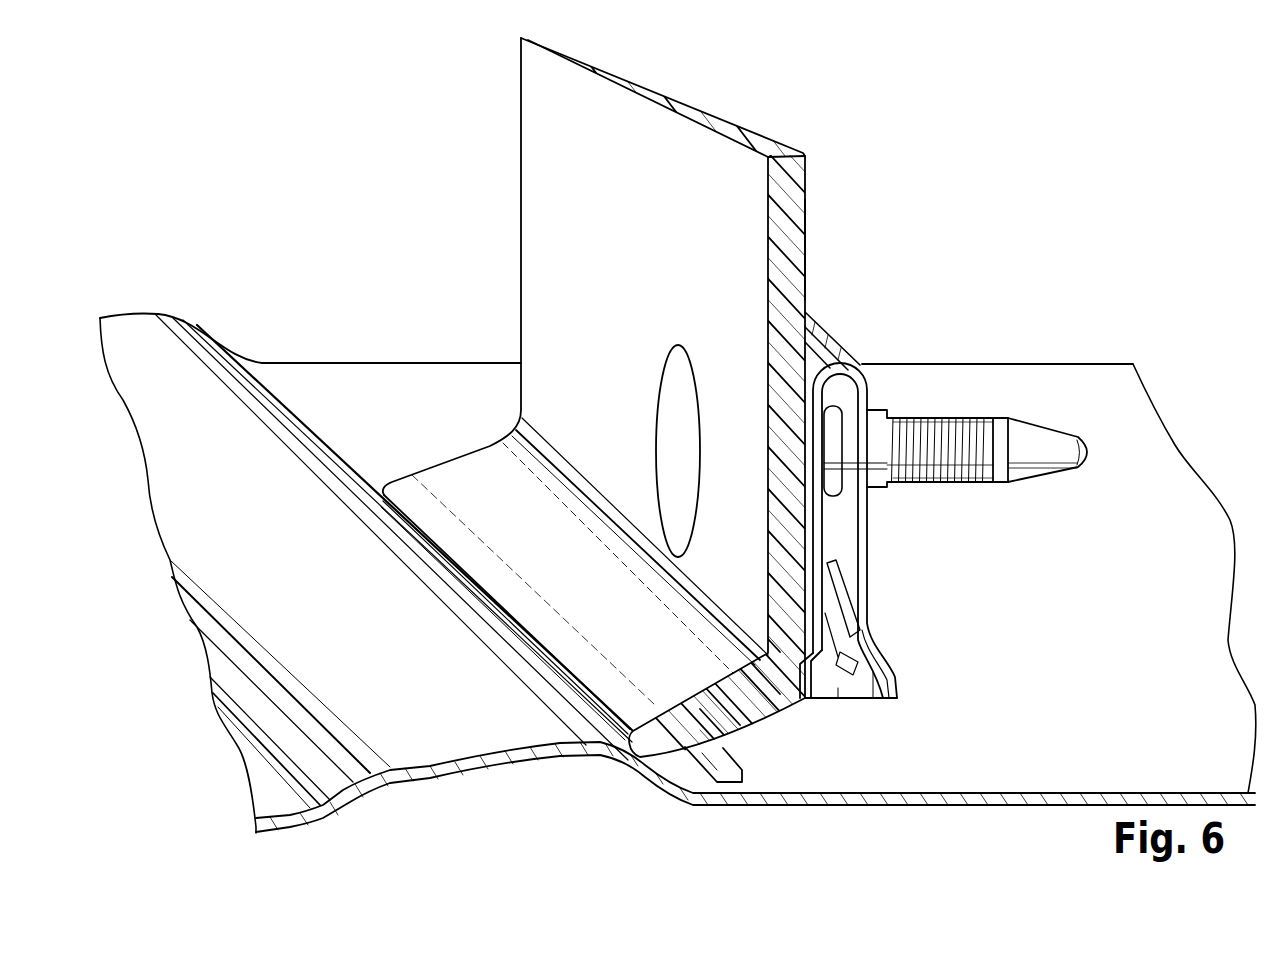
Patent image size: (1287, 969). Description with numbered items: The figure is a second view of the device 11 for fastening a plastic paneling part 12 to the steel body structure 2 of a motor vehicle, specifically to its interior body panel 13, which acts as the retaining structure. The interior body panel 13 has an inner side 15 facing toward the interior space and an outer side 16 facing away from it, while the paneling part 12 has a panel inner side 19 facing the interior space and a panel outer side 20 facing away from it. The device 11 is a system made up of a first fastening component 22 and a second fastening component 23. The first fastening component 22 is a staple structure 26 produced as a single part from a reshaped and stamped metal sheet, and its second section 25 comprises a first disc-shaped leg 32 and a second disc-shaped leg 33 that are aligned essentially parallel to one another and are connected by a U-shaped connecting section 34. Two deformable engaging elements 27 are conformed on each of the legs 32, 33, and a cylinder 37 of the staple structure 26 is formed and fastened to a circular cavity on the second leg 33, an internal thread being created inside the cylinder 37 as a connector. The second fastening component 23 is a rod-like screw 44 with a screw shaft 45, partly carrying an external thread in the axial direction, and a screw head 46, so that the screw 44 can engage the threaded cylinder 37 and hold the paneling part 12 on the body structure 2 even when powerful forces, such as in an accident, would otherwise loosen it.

The body structure 2 is at (678, 575).
The interior body panel 13 is at (678, 575).
The device 11 is at (1012, 323).
The paneling part 12 is at (806, 153).
The inner side 15 is at (421, 745).
The outer side 16 is at (513, 758).
The panel inner side 19 is at (552, 168).
The panel outer side 20 is at (808, 242).
The first fastening component 22 is at (889, 473).
The second fastening component 23 is at (907, 437).
The second section 25 is at (889, 473).
The staple structure 26 is at (889, 473).
The engaging element 27 is at (880, 648).
The first leg 32 is at (862, 522).
The second leg 33 is at (818, 545).
The U-shaped connecting section 34 is at (820, 340).
The cylinder 37 is at (836, 406).
The screw 44 is at (907, 437).
The screw shaft 45 is at (1058, 441).
The screw head 46 is at (670, 398).